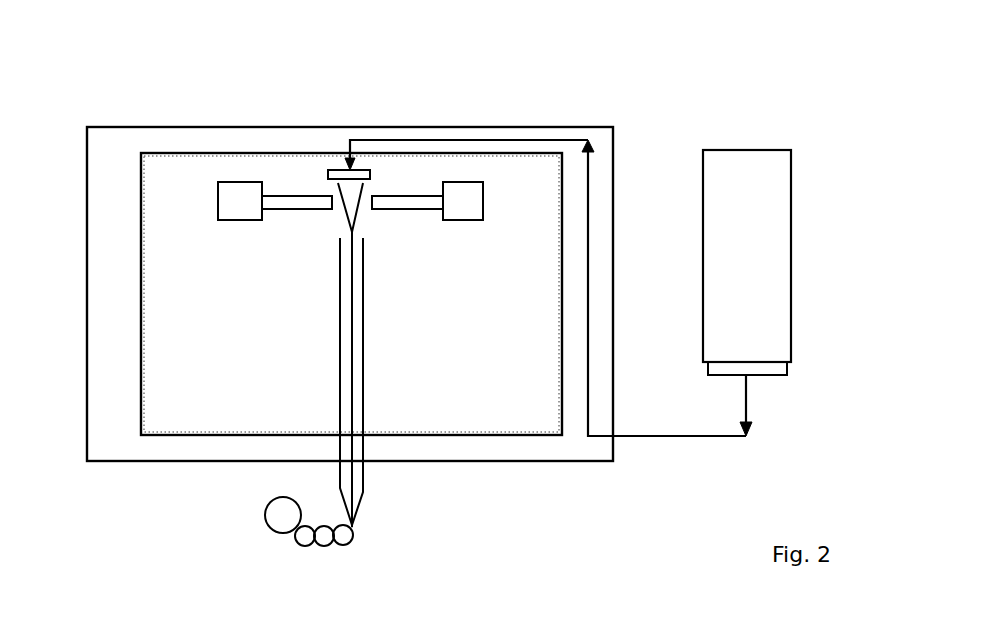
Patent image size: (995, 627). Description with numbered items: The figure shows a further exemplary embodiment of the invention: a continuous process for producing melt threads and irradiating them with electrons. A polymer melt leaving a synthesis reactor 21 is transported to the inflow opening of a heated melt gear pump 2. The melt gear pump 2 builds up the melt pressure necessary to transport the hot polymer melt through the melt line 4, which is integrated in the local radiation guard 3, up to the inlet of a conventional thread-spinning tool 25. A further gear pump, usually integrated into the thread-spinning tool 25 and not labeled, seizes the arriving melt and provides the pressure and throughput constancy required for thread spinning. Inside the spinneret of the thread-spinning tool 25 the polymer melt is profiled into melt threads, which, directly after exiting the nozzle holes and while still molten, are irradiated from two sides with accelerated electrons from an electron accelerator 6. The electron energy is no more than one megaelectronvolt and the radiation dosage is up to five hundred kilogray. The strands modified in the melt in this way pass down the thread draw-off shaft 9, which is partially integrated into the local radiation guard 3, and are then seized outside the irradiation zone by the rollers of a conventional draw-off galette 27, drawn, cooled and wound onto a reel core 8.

The heated melt gear pump 2 is at (758, 368).
The local radiation guard 3 is at (475, 445).
The melt line 4 is at (508, 140).
The electron accelerator 6 is at (244, 205).
The reel core 8 is at (274, 521).
The thread draw-off shaft 9 is at (348, 330).
The synthesis reactor 21 is at (732, 182).
The thread-spinning tool 25 is at (337, 163).
The draw-off galette 27 is at (343, 542).